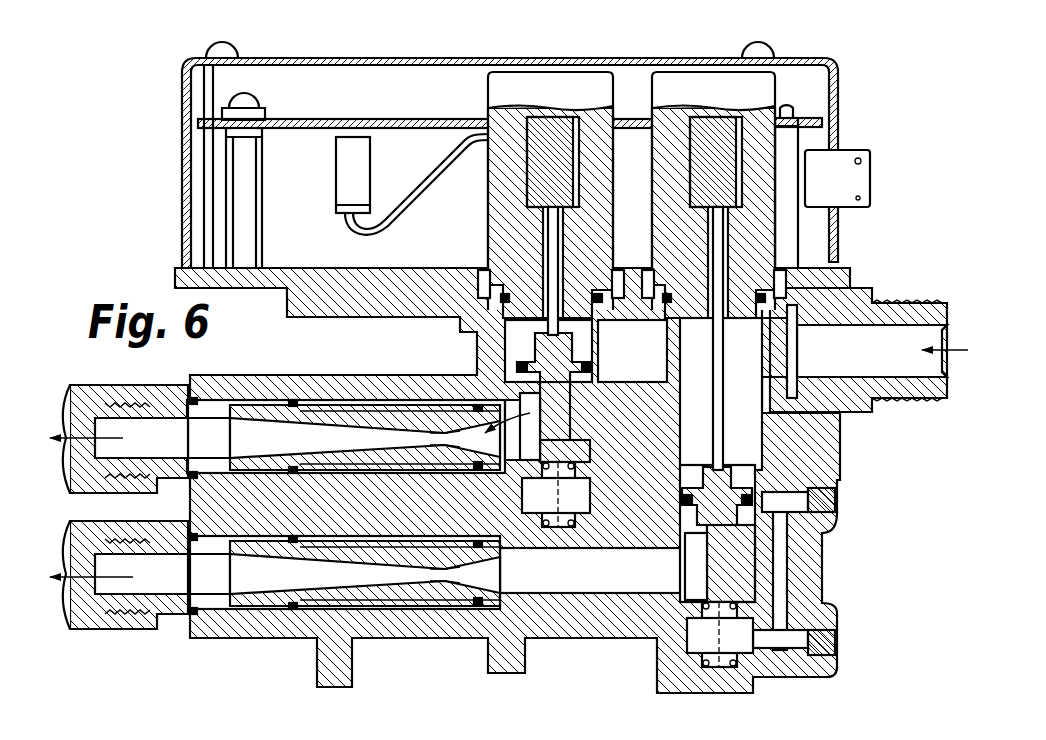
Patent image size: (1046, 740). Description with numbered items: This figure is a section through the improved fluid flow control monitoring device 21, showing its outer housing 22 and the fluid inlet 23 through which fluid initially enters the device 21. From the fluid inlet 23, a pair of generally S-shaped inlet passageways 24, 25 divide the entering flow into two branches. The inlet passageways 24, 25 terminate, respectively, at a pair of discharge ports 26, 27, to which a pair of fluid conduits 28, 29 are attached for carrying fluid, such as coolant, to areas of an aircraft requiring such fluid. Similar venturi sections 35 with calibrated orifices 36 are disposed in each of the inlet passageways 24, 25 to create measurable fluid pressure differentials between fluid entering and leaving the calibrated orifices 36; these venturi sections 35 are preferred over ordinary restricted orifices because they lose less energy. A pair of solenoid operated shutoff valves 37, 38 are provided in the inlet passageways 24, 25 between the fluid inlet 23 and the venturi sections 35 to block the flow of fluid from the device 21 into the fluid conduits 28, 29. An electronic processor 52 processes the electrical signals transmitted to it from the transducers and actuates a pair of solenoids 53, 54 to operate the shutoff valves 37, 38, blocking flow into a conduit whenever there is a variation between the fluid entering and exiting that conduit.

The fluid flow control monitoring device 21 is at (568, 54).
The outer housing 22 is at (822, 567).
The fluid inlet 23 is at (935, 338).
The inlet passageway 24 is at (695, 418).
The inlet passageway 25 is at (655, 352).
The discharge port 26 is at (107, 580).
The discharge port 27 is at (110, 493).
The fluid conduit 28 is at (100, 630).
The fluid conduit 29 is at (126, 385).
The venturi section 35 is at (256, 452).
The calibrated orifice 36 is at (443, 436).
The solenoid operated shutoff valve 37 is at (745, 492).
The solenoid operated shutoff valve 38 is at (565, 360).
The electronic processor 52 is at (398, 118).
The solenoid 53 is at (718, 104).
The solenoid 54 is at (555, 104).